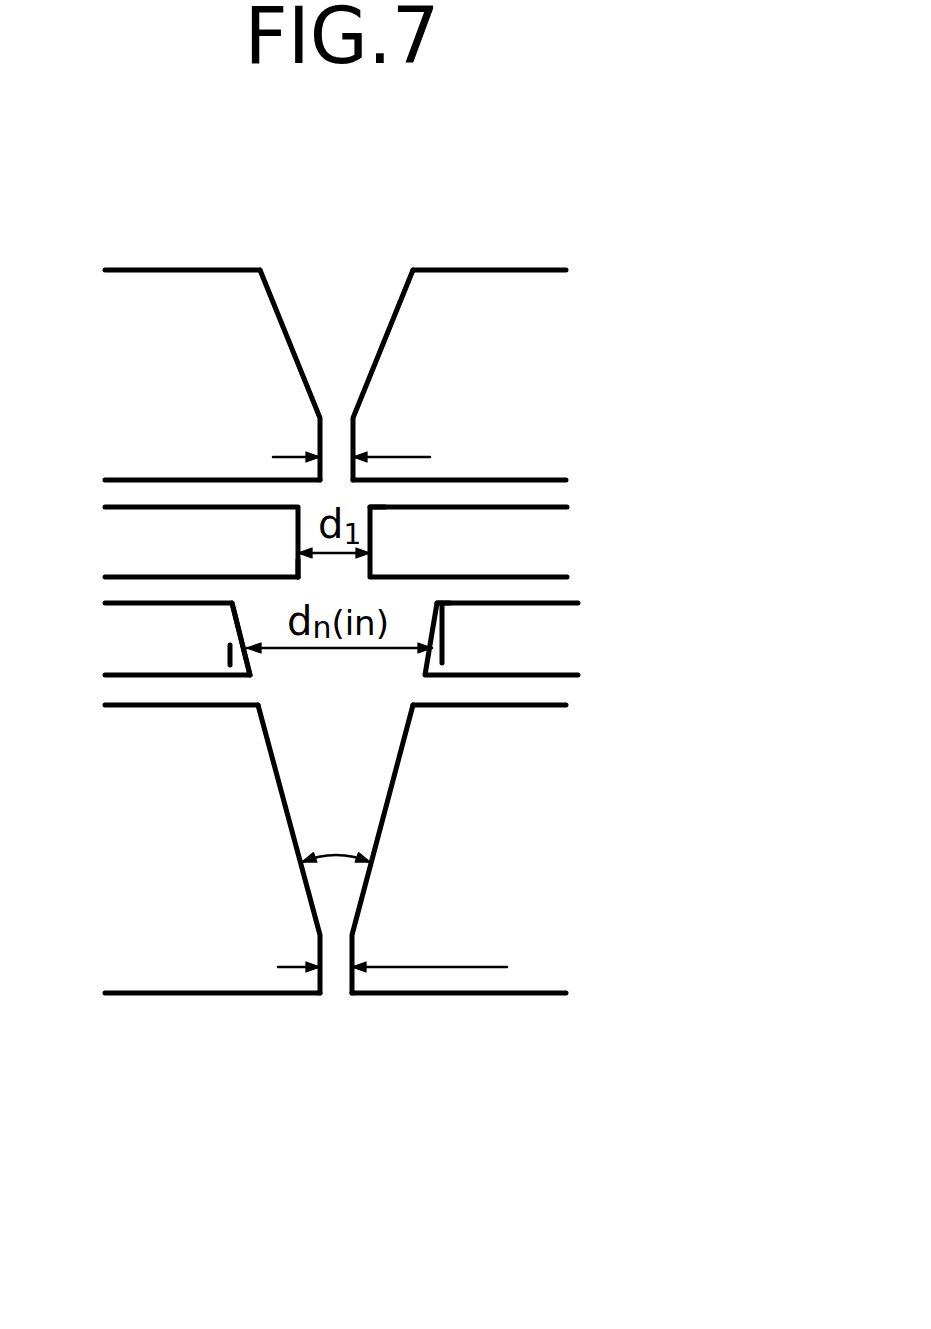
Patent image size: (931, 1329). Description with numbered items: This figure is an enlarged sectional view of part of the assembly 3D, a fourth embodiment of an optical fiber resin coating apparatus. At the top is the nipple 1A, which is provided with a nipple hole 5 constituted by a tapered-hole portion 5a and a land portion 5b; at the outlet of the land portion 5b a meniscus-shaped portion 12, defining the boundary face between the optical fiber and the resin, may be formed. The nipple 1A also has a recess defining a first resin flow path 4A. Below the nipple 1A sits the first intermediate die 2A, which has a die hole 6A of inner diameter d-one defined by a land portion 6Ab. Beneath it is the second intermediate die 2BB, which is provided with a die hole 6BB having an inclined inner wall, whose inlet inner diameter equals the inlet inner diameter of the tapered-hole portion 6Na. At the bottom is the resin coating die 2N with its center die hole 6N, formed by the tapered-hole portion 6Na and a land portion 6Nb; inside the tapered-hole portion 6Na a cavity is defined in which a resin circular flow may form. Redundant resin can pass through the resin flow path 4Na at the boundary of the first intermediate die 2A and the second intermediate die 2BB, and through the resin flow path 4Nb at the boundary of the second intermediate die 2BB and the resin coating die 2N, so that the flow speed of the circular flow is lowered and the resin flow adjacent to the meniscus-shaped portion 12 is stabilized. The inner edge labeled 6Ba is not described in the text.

The nipple 1A is at (530, 332).
The first intermediate die 2A is at (527, 531).
The second intermediate die 2BB is at (523, 652).
The resin coating die 2N is at (502, 818).
The assembly 3D is at (846, 310).
The first resin flow path 4A is at (208, 492).
The resin flow path 4Na is at (178, 588).
The resin flow path 4Nb is at (180, 693).
The nipple hole 5 is at (387, 301).
The tapered-hole portion 5a is at (343, 323).
The land portion 5b is at (343, 445).
The die hole 6A is at (346, 572).
The land portion 6Ab is at (357, 506).
The inner edge of second annular member 6Ba is at (438, 664).
The die hole 6BB is at (367, 670).
The center die hole 6N is at (235, 935).
The tapered-hole portion 6Na is at (298, 808).
The land portion 6Nb is at (338, 985).
The meniscus-shaped portion 12 is at (338, 473).